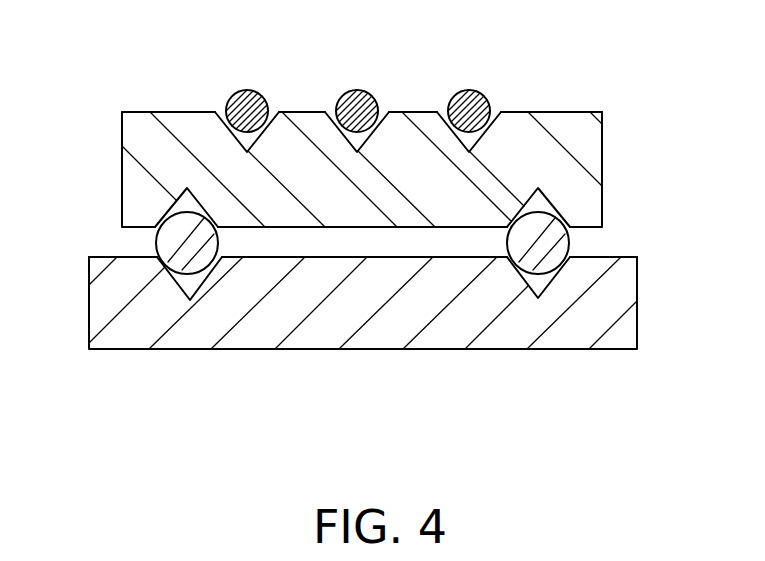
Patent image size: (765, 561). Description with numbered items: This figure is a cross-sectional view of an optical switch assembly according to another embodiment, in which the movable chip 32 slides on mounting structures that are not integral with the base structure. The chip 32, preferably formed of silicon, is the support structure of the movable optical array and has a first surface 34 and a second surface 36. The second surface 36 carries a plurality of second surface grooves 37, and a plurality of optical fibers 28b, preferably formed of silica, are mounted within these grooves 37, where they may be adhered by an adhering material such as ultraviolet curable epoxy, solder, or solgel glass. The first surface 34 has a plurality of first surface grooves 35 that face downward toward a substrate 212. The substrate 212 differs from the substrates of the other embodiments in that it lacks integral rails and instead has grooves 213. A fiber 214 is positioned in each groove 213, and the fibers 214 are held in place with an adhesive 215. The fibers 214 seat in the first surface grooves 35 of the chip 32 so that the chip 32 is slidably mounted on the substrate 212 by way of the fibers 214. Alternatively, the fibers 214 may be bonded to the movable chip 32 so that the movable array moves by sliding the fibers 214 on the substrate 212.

The optical fibers 28b is at (258, 94).
The chip 32 is at (573, 140).
The first surface 34 is at (365, 228).
The first surface grooves 35 is at (182, 193).
The second surface 36 is at (585, 112).
The second surface grooves 37 is at (243, 142).
The substrate 212 is at (522, 333).
The grooves 213 is at (192, 300).
The fiber 214 is at (178, 243).
The adhesive 215 is at (155, 256).